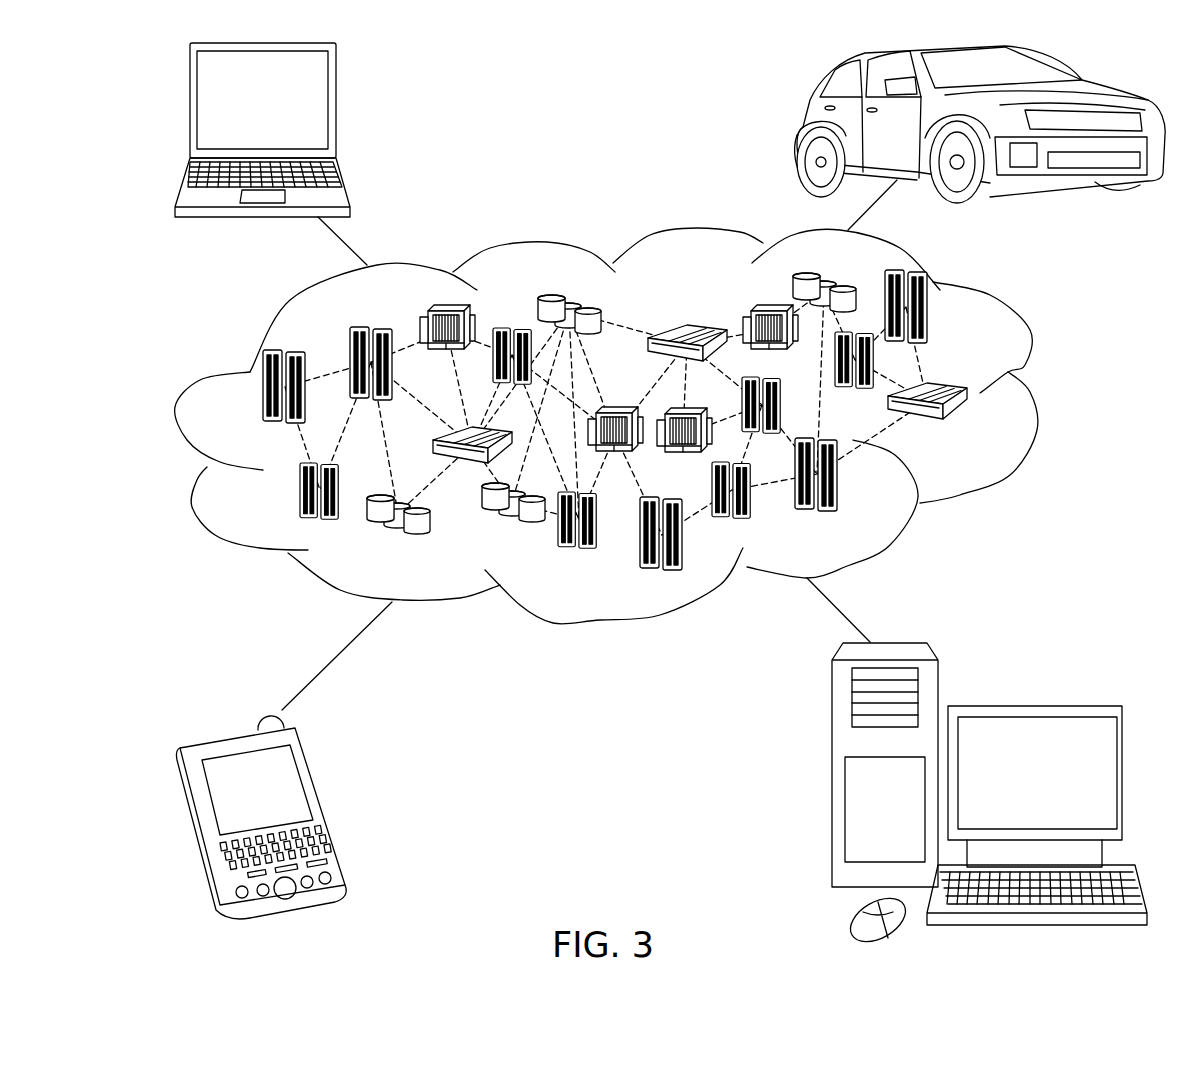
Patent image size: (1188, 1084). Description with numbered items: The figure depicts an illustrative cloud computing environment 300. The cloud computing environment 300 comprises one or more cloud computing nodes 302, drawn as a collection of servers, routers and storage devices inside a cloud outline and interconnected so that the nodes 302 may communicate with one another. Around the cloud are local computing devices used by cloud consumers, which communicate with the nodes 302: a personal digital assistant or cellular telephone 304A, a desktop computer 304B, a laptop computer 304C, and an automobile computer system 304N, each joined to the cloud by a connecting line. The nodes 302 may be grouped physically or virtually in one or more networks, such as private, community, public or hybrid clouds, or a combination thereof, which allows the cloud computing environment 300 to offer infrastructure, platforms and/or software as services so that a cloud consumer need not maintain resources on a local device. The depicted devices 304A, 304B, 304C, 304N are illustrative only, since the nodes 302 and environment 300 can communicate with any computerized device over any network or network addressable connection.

The cloud computing environment 300 is at (1032, 397).
The cloud computing nodes 302 is at (970, 430).
The personal digital assistant or cellular telephone 304A is at (322, 800).
The desktop computer 304B is at (1030, 705).
The laptop computer 304C is at (336, 108).
The automobile computer system 304N is at (800, 127).